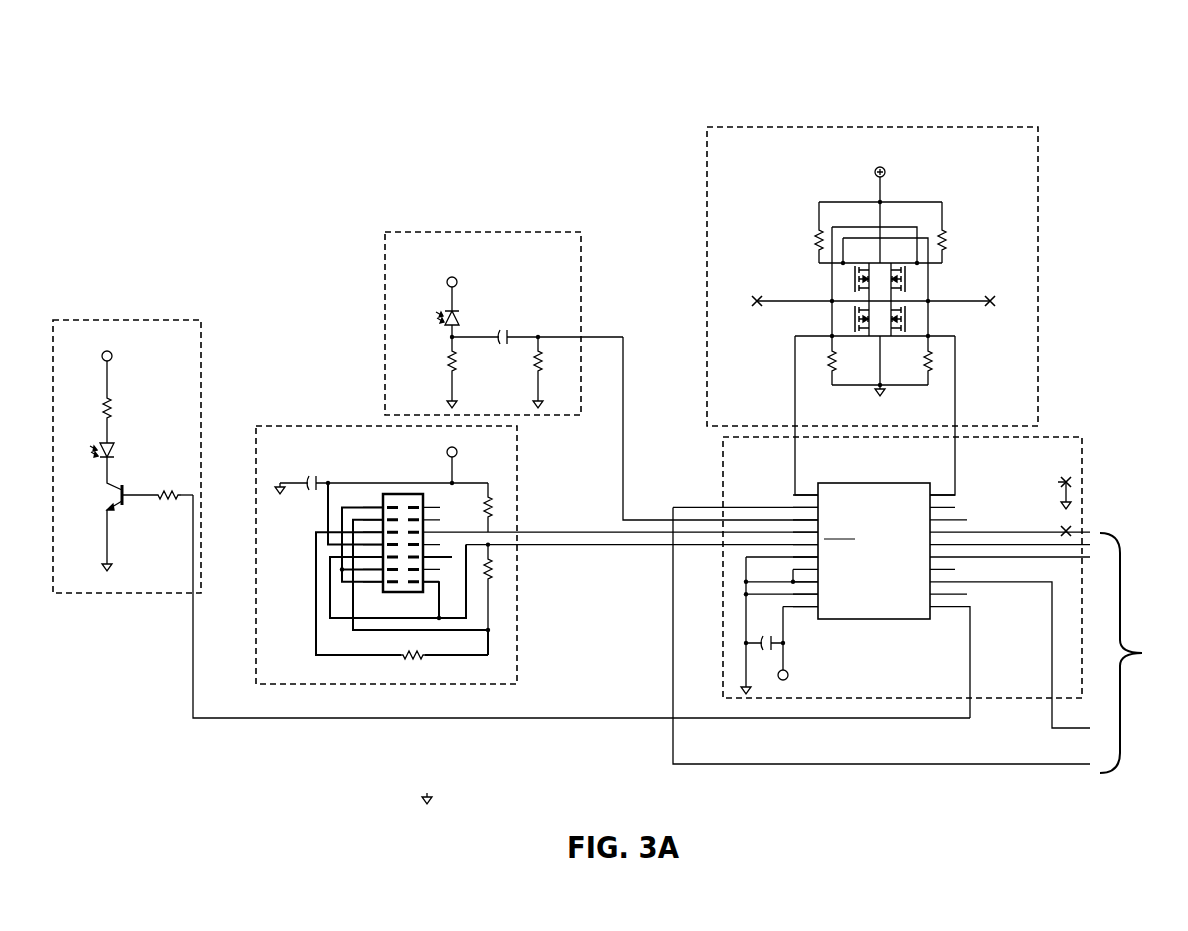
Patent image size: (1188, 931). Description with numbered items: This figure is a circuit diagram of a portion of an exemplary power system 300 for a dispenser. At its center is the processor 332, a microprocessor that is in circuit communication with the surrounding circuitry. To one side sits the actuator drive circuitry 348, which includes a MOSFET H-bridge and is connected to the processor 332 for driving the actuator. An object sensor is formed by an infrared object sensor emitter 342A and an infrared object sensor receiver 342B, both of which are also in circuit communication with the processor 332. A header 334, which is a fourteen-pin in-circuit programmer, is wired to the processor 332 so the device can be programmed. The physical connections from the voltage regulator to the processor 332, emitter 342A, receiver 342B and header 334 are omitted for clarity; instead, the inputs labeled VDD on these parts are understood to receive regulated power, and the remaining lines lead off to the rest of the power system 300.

The power system 300 is at (453, 95).
The object sensor emitter 342A is at (100, 320).
The object sensor receiver 342B is at (480, 232).
The header 334 is at (517, 598).
The actuator drive circuitry 348 is at (1038, 184).
The processor 332 is at (1073, 437).